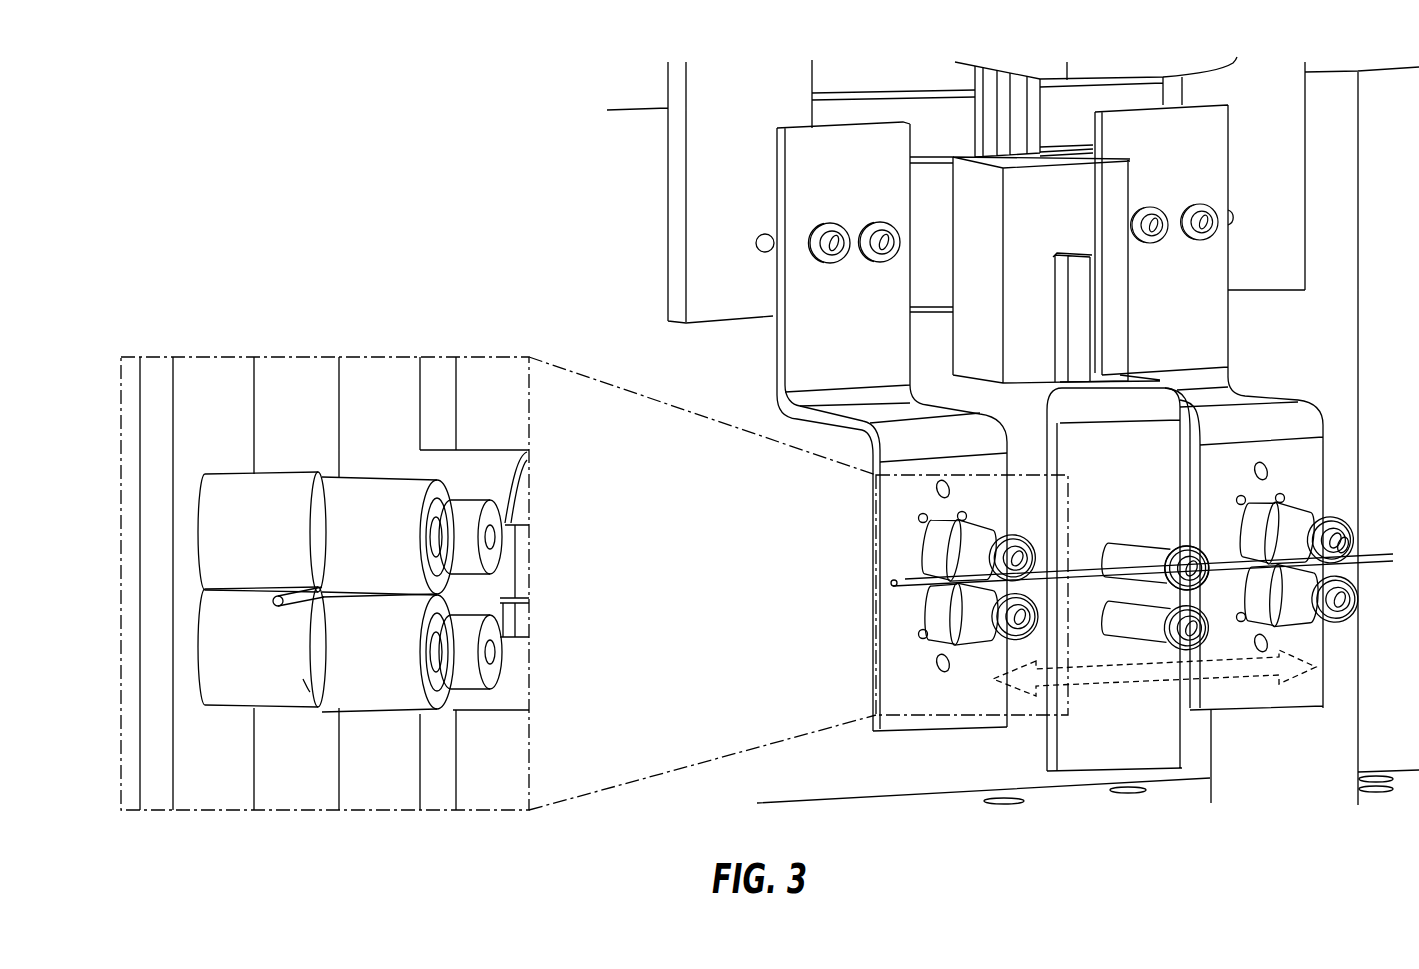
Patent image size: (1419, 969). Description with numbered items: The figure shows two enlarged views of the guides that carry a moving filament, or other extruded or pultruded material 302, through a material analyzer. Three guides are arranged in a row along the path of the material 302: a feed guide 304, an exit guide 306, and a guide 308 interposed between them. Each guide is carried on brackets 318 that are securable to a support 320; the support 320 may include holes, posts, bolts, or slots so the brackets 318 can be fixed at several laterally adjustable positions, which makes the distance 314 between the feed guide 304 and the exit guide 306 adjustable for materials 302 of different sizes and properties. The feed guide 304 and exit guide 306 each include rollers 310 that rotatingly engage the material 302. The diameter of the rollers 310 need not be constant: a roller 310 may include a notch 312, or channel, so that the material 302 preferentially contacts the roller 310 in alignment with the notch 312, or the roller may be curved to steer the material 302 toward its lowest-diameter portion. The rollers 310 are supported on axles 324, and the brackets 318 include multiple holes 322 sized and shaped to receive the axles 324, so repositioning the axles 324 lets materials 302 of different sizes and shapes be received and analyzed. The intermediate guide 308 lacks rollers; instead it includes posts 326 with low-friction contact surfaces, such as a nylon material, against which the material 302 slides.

The material 302 is at (268, 600).
The feed guide 304 is at (217, 531).
The exit guide 306 is at (1325, 513).
The guide 308 is at (1137, 623).
The rollers 310 is at (215, 679).
The notch 312 is at (307, 683).
The distance 314 is at (1225, 677).
The brackets 318 is at (795, 360).
The support 320 is at (1287, 107).
The holes 322 is at (932, 489).
The axles 324 is at (1343, 545).
The posts 326 is at (1180, 548).